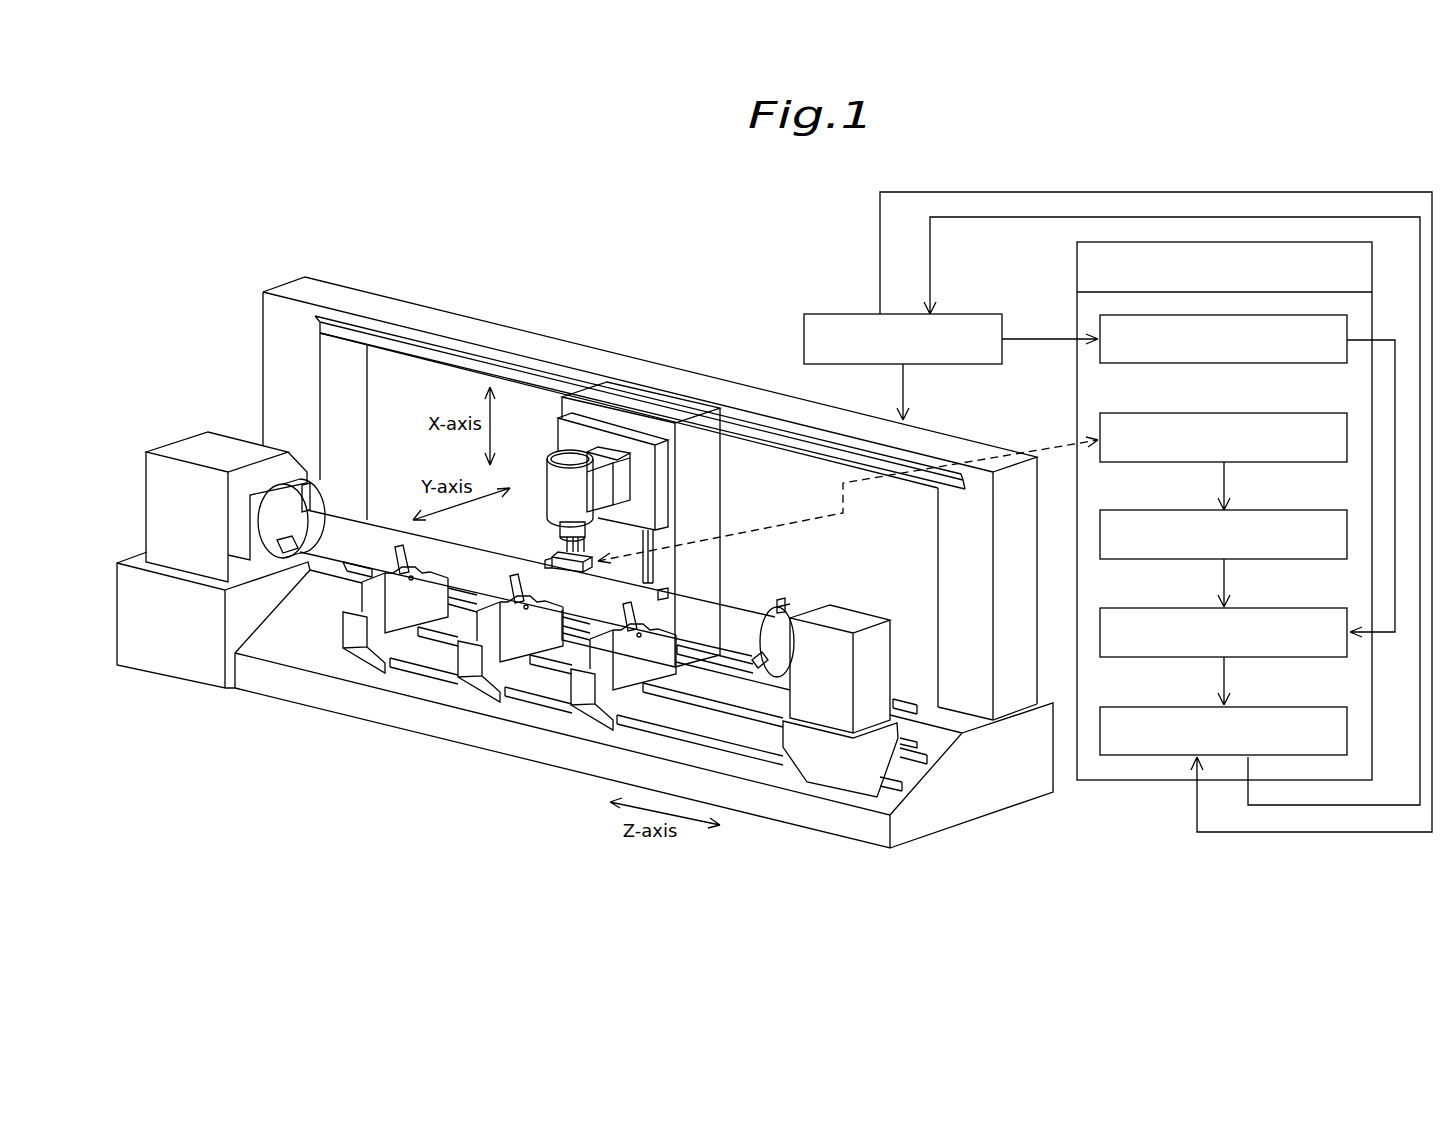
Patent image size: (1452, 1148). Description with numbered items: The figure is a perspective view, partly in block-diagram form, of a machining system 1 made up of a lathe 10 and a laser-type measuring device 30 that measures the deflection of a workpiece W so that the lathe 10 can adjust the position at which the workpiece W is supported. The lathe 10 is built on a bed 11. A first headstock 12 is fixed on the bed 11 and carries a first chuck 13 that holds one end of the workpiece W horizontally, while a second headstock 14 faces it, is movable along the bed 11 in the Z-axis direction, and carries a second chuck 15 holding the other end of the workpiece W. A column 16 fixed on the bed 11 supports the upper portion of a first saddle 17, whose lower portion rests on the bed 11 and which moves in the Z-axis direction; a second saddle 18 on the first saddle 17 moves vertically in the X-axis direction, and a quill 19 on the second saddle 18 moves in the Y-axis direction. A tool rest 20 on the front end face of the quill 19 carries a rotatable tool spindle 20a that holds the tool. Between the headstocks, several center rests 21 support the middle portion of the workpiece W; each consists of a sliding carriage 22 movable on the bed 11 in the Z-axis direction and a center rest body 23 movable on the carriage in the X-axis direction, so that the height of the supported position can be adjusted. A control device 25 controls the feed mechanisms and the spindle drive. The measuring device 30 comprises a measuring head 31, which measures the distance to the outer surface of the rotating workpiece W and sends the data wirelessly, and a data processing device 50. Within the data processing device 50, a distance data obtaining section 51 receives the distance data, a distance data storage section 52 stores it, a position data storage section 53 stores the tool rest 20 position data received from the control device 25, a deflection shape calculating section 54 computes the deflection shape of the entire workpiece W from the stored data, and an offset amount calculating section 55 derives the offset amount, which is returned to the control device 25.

The machining system 1 is at (259, 206).
The lathe 10 is at (542, 283).
The bed 11 is at (267, 690).
The first headstock 12 is at (193, 447).
The first chuck 13 is at (275, 498).
The second headstock 14 is at (852, 618).
The second chuck 15 is at (790, 611).
The column 16 is at (363, 297).
The first saddle 17 is at (665, 400).
The second saddle 18 is at (667, 488).
The quill 19 is at (598, 453).
The tool rest 20 is at (567, 456).
The tool spindle 20a is at (558, 527).
The center rest 21 is at (480, 701).
The sliding carriage 22 is at (363, 662).
The center rest body 23 is at (403, 626).
The control device 25 is at (850, 314).
The laser-type measuring device 30 is at (848, 500).
The measuring head 31 is at (552, 556).
The data processing device 50 is at (1172, 511).
The distance data obtaining section 51 is at (1148, 463).
The distance data storage section 52 is at (1148, 560).
The position data storage section 53 is at (1148, 365).
The deflection shape calculating section 54 is at (1148, 658).
The offset amount calculating section 55 is at (1300, 706).
The workpiece W is at (372, 528).